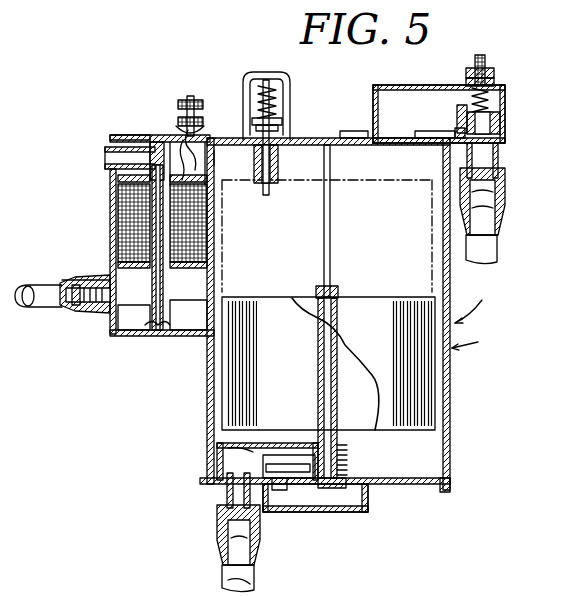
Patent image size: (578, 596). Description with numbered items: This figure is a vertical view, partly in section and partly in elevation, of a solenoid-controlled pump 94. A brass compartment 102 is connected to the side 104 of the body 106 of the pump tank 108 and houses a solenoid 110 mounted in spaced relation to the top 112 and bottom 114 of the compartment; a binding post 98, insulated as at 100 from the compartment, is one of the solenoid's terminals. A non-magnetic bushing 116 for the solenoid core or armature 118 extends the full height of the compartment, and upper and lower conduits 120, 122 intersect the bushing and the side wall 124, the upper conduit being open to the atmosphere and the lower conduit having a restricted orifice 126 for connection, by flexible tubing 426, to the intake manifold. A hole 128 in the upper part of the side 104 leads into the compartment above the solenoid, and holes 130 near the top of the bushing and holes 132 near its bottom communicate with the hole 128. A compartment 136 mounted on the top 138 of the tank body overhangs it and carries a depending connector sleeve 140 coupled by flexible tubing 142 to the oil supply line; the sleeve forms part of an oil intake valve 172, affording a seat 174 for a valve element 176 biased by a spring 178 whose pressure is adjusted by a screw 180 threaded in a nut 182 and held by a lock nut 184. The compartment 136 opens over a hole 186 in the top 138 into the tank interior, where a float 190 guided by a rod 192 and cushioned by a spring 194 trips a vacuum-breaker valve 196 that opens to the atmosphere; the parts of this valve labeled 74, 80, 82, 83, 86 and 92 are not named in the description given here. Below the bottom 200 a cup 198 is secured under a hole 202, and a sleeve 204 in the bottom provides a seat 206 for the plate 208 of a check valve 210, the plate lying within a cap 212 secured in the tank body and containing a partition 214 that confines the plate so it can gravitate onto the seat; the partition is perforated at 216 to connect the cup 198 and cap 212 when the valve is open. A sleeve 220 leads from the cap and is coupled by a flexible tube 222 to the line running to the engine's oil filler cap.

The valve seat 74 is at (280, 168).
The valve disc 80 is at (270, 128).
The spring 82 is at (270, 100).
The cap 83 is at (268, 72).
The pin 86 is at (272, 187).
The valve member 92 is at (280, 150).
The pump 94 is at (483, 304).
The binding post 98 is at (190, 95).
The insulation 100 is at (202, 140).
The compartment 102 is at (130, 135).
The side of tank body 104 is at (207, 368).
The tank body 106 is at (450, 396).
The pump tank 108 is at (484, 340).
The solenoid 110 is at (118, 208).
The top of compartment 112 is at (115, 135).
The bottom of compartment 114 is at (182, 337).
The non-magnetic bushing 116 is at (165, 296).
The solenoid core or armature 118 is at (158, 333).
The upper conduit 120 is at (105, 150).
The lower conduit 122 is at (105, 309).
The side wall of compartment 124 is at (110, 238).
The restricted orifice 126 is at (62, 303).
The hole 128 is at (215, 158).
The holes 130 is at (150, 136).
The holes 132 is at (190, 310).
The compartment 136 is at (405, 84).
The top of tank body 138 is at (355, 137).
The connector sleeve 140 is at (500, 149).
The flexible tubing 142 is at (504, 190).
The oil intake valve 172 is at (498, 98).
The seat 174 is at (502, 124).
The valve element 176 is at (500, 112).
The spring 178 is at (470, 97).
The screw 180 is at (480, 55).
The nut 182 is at (496, 80).
The lock nut 184 is at (490, 68).
The hole 186 is at (327, 221).
The float 190 is at (400, 296).
The rod 192 is at (332, 220).
The spring 194 is at (342, 453).
The vacuum-breaker valve 196 is at (290, 86).
The cup 198 is at (320, 512).
The bottom of tank body 200 is at (405, 486).
The hole 202 is at (352, 480).
The sleeve 204 is at (342, 492).
The seat 206 is at (298, 480).
The valve plate 208 is at (278, 446).
The check valve 210 is at (275, 490).
The cap 212 is at (217, 445).
The partition 214 is at (325, 445).
The perforation 216 is at (263, 460).
The sleeve 220 is at (227, 490).
The flexible tube 222 is at (217, 530).
The flexible tubing 426 is at (30, 288).